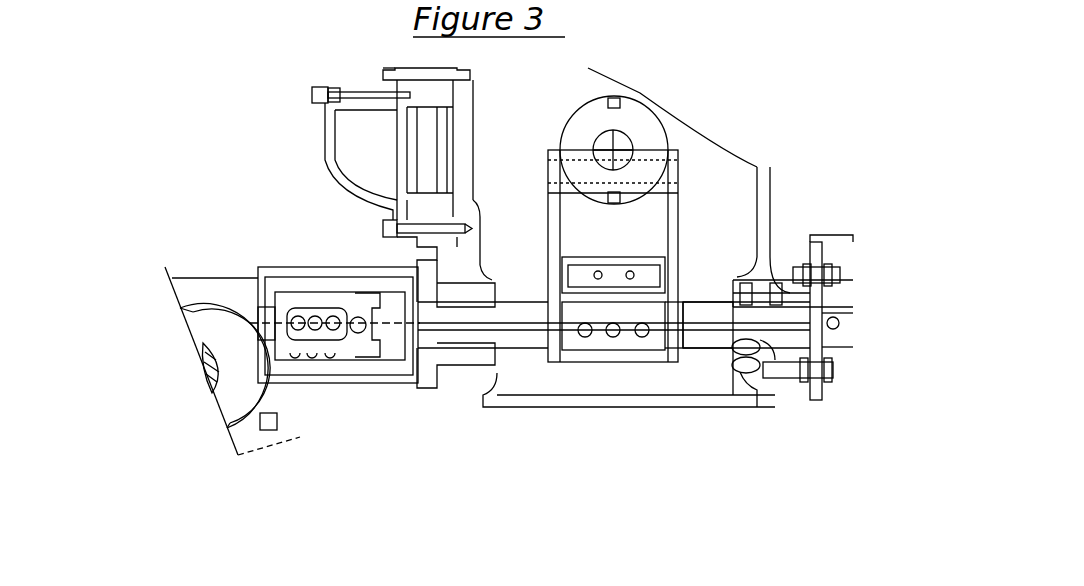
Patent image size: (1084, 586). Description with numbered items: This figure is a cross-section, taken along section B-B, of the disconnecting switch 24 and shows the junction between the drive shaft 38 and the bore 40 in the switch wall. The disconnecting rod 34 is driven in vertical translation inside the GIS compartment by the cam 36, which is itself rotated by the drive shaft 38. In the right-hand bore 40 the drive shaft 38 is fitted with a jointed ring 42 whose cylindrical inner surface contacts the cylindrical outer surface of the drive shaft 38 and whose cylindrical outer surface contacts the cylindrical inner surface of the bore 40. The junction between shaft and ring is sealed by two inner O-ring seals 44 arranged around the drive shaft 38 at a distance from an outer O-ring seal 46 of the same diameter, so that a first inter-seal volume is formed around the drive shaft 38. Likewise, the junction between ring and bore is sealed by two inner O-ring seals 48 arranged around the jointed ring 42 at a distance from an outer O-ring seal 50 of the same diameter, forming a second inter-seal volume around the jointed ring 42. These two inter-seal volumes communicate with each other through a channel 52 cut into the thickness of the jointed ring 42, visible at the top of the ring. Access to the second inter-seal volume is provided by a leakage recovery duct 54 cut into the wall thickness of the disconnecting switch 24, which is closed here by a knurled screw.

The disconnecting switch 24 is at (150, 150).
The disconnecting rod 34 is at (613, 148).
The cam 36 is at (670, 237).
The drive shaft 38 is at (695, 338).
The bore 40 is at (848, 292).
The jointed ring 42 is at (737, 297).
The inner O-ring seals 44 is at (747, 340).
The outer O-ring seal 46 is at (760, 345).
The inner O-ring seals 48 is at (752, 372).
The outer O-ring seal 50 is at (773, 367).
The channel 52 is at (763, 293).
The leakage recovery duct 54 is at (757, 372).